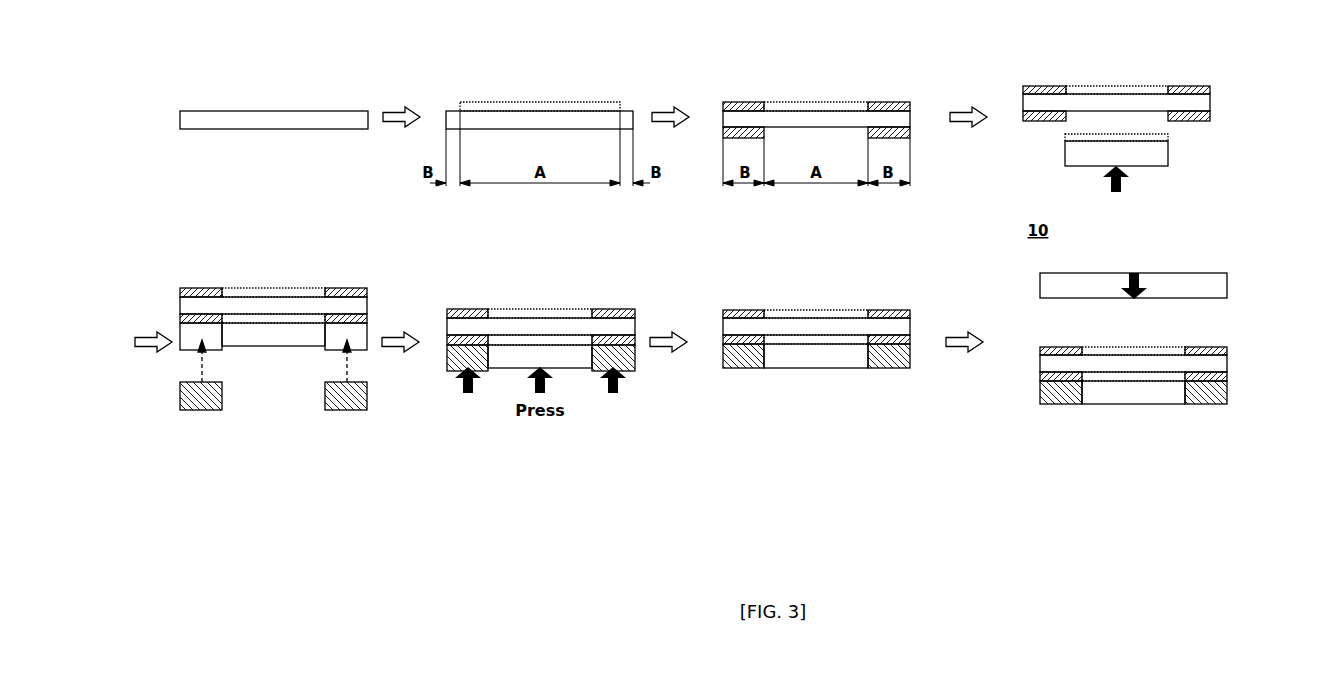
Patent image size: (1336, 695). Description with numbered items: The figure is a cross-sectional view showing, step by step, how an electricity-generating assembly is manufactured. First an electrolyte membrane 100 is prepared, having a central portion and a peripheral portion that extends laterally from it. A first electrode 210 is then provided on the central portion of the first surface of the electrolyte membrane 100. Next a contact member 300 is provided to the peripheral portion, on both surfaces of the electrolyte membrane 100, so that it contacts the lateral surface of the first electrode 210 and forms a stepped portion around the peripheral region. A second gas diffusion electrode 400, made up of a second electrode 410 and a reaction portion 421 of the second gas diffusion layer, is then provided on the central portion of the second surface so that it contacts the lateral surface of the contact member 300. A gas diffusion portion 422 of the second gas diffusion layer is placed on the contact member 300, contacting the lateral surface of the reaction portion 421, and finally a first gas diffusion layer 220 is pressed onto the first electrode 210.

The electrolyte membrane 100 is at (273, 113).
The first electrode 210 is at (543, 102).
The first gas diffusion layer 220 is at (1206, 273).
The contact member 300 is at (724, 127).
The second gas diffusion electrode 400 is at (1232, 125).
The second electrode 410 is at (1168, 137).
The reaction portion of the second gas diffusion layer 421 is at (1168, 153).
The gas diffusion portion of the second gas diffusion layer 422 is at (325, 395).